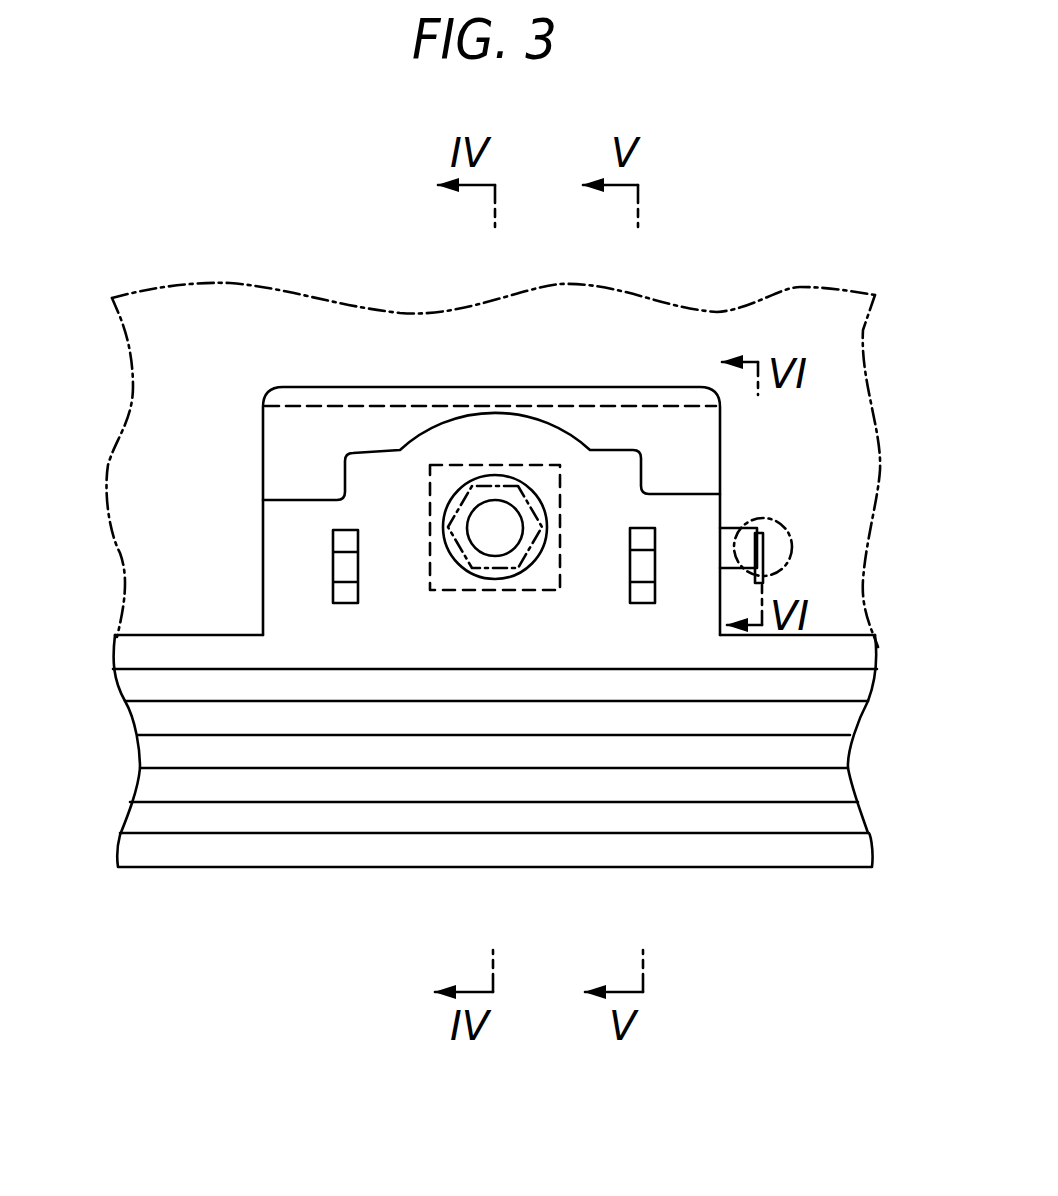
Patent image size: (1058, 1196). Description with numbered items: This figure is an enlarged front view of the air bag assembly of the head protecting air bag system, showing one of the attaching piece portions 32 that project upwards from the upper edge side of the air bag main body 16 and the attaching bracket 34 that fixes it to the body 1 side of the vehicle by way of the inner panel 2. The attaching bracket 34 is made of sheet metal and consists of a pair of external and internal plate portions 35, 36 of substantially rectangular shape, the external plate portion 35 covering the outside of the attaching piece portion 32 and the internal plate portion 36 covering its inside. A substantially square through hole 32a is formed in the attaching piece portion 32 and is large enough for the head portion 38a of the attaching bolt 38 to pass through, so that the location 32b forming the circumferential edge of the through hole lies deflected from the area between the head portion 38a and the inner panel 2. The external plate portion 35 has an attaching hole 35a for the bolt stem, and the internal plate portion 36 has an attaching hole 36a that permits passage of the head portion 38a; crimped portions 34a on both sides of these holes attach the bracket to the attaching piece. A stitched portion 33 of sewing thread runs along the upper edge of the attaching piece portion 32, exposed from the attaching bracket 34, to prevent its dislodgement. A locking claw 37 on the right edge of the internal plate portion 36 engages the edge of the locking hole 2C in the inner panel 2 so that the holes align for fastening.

The body 1 is at (532, 398).
The inner panel 2 is at (840, 304).
The locking hole 2C is at (778, 522).
The air bag main body 16 is at (776, 880).
The attaching piece portion 32 is at (705, 470).
The through hole 32a is at (518, 465).
The location constituting circumferential edge of the through hole 32b is at (432, 525).
The stitched portion 33 is at (672, 406).
The attaching bracket 34 is at (354, 427).
The crimped portions 34a is at (347, 567).
The external plate portion 35 is at (282, 518).
The attaching hole 35a is at (472, 512).
The internal plate portion 36 is at (302, 503).
The attaching hole 36a is at (455, 560).
The locking claw 37 is at (767, 550).
The attaching bolt 38 is at (472, 702).
The head portion 38a is at (495, 579).